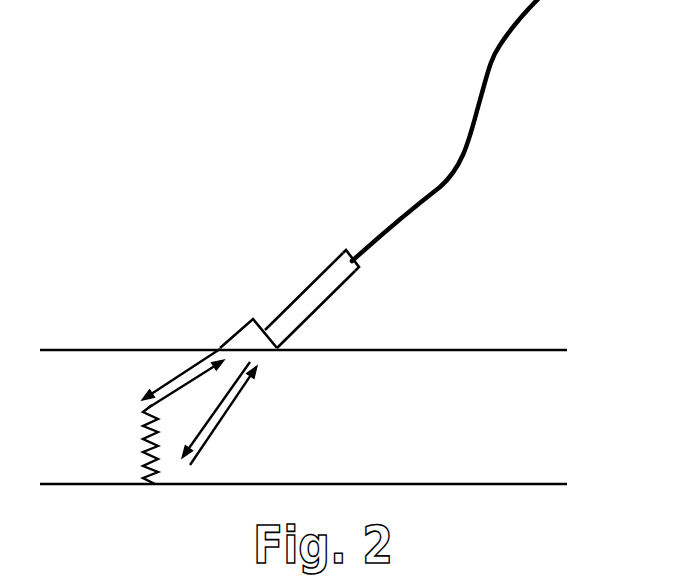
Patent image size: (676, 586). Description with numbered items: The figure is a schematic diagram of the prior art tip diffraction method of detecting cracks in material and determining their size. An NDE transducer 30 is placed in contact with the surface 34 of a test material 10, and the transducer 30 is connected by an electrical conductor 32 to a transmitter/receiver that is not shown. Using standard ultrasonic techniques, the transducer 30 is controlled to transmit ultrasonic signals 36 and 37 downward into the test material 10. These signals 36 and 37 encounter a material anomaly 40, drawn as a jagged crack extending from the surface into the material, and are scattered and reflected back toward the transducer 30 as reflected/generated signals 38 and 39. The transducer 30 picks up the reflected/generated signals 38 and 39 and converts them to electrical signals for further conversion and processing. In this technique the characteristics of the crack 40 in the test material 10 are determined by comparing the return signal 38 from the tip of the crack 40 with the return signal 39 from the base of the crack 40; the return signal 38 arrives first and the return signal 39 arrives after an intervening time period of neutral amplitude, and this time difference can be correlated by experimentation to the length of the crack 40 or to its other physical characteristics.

The test material 10 is at (444, 436).
The NDE transducer 30 is at (278, 317).
The electrical conductor 32 is at (440, 185).
The surface 34 is at (476, 349).
The ultrasonic signal 36 is at (175, 378).
The ultrasonic signal 37 is at (215, 422).
The reflected/generated signal 38 is at (188, 381).
The reflected/generated signal 39 is at (238, 395).
The material anomaly 40 is at (145, 438).